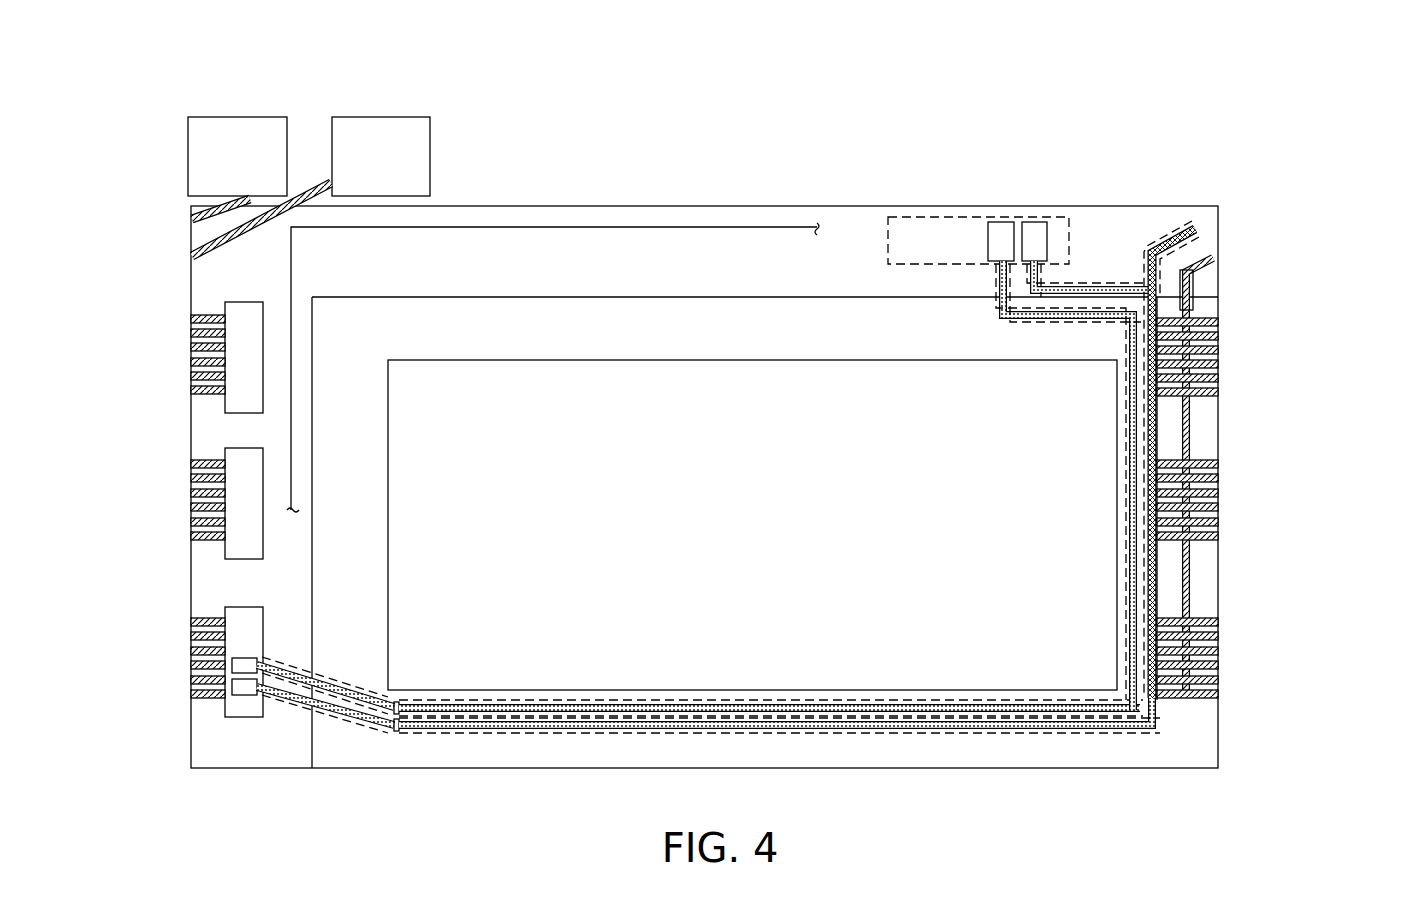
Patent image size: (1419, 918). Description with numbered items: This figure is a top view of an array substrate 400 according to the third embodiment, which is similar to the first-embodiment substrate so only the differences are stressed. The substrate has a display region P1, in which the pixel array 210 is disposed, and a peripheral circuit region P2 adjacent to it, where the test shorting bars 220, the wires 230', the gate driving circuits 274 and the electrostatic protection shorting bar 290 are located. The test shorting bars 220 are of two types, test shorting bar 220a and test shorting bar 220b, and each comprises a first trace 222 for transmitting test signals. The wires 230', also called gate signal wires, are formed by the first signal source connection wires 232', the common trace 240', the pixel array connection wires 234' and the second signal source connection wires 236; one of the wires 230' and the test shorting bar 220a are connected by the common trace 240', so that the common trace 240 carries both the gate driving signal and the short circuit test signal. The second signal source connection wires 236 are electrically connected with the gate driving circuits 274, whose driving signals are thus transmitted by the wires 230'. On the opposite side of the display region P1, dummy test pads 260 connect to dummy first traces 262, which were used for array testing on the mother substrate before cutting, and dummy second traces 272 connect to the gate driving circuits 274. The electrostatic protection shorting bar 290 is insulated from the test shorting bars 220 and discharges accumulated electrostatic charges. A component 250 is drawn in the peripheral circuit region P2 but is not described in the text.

The array substrate 400 is at (1298, 827).
The pixel array 210 is at (537, 660).
The electrostatic protection shorting bar 290 is at (660, 227).
The dummy test pads 260 is at (403, 125).
The dummy first traces 262 is at (200, 213).
The gate driving circuits 274 is at (237, 307).
The dummy second traces 272 is at (191, 657).
The second signal source connection wires 236 is at (360, 702).
The connectors 250 is at (1000, 226).
The test shorting bars 220 is at (1272, 432).
The test shorting bar 220a is at (1243, 432).
The test shorting bar 220b is at (1193, 311).
The first trace 222 is at (1163, 237).
The common trace 240 is at (1210, 458).
The wires 230' is at (1252, 431).
The first signal source connection wires 232' is at (1242, 375).
The common trace 240' is at (1242, 513).
The pixel array connection wires 234' is at (1241, 672).
The display region P1 is at (472, 641).
The peripheral circuit region P2 is at (205, 727).